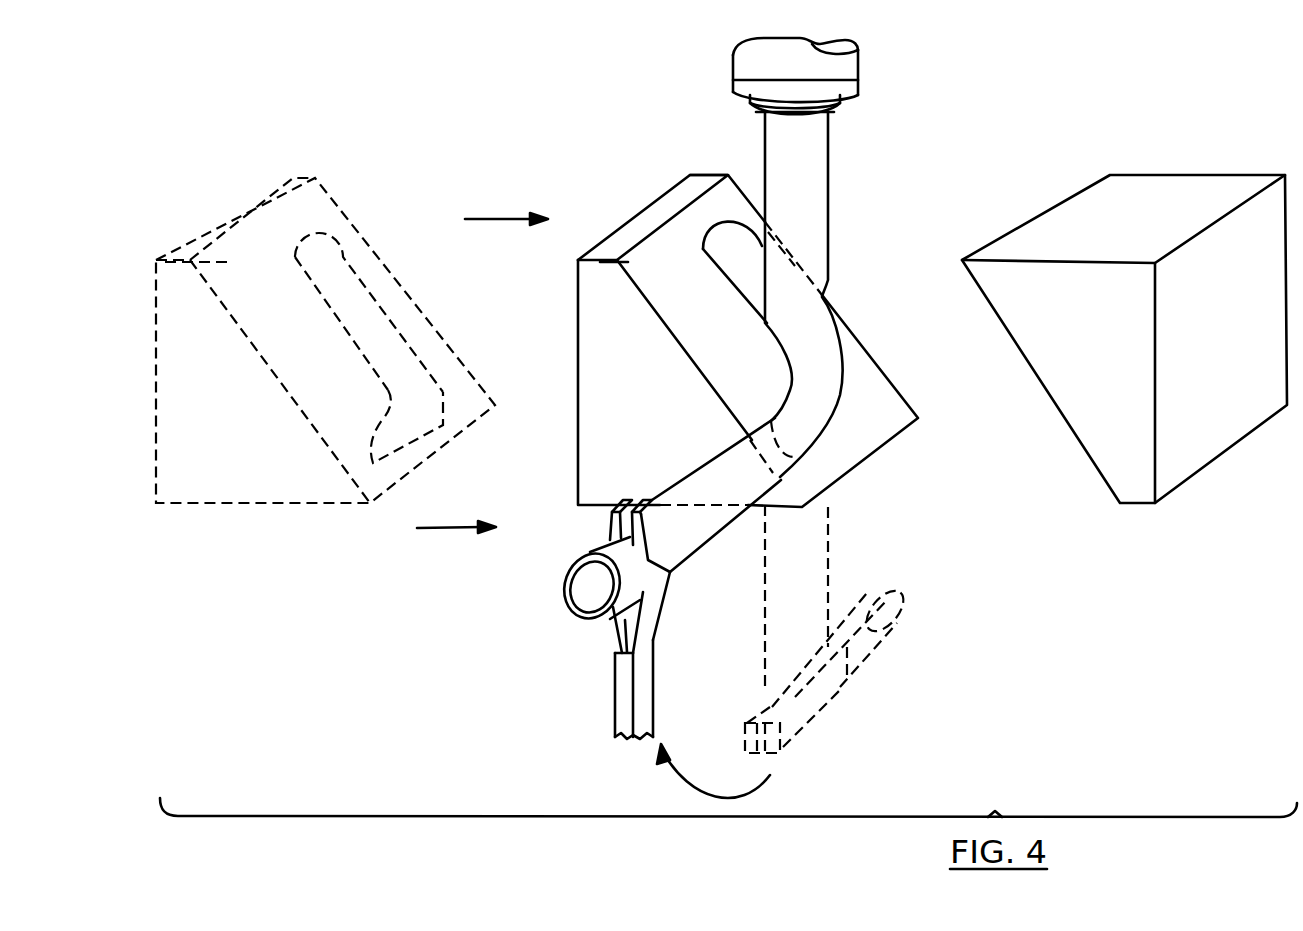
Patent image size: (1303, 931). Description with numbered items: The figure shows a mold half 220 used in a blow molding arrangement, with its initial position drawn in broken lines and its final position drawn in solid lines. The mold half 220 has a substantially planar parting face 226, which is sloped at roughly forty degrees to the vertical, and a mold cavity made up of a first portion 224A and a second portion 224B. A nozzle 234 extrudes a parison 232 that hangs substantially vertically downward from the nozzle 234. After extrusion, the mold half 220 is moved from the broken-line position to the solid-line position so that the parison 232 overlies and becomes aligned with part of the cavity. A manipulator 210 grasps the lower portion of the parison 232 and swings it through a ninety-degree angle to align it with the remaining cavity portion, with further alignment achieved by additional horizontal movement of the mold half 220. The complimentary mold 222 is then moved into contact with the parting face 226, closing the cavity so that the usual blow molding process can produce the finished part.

The manipulator 210 is at (650, 638).
The mold half 220 is at (303, 177).
The complimentary mold 222 is at (1208, 176).
The first portion of mold cavity 224A is at (338, 258).
The second portion of mold cavity 224B is at (410, 425).
The parting face 226 is at (230, 265).
The parison 232 is at (828, 195).
The nozzle 234 is at (855, 73).